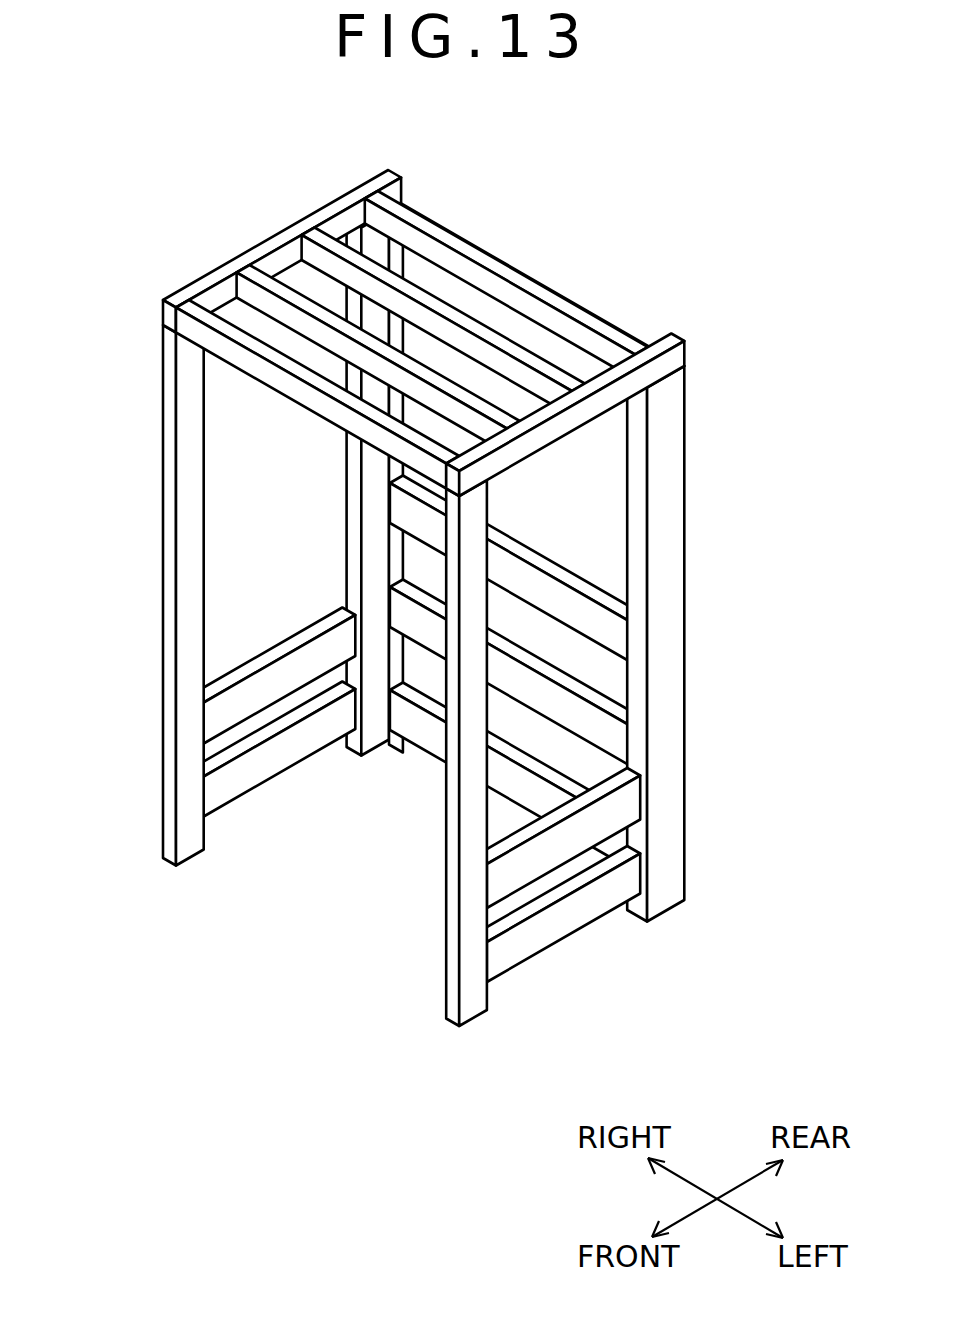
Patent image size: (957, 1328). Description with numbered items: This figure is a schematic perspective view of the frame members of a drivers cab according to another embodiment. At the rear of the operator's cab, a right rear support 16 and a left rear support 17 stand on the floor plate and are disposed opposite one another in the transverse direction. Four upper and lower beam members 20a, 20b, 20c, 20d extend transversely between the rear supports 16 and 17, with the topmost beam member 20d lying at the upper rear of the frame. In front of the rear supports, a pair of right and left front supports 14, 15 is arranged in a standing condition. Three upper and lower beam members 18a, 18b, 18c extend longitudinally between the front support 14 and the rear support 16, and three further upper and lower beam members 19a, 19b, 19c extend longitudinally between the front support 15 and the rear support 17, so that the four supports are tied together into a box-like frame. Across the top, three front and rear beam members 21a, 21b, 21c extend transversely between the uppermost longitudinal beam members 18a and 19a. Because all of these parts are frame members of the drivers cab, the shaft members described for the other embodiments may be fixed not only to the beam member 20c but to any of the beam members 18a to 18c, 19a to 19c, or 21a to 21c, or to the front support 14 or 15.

The front support 14 is at (163, 806).
The front support 15 is at (446, 958).
The right rear support 16 is at (376, 482).
The left rear support 17 is at (668, 638).
The beam member 18a is at (283, 228).
The beam member 18b is at (285, 667).
The beam member 18c is at (281, 762).
The beam member 19a is at (597, 405).
The beam member 19b is at (627, 803).
The beam member 19c is at (627, 867).
The beam member 20a is at (585, 594).
The beam member 20b is at (590, 690).
The beam member 20c is at (545, 788).
The beam member 20d is at (568, 306).
The front and rear beam member 21a is at (236, 333).
The front and rear beam member 21b is at (267, 273).
The front and rear beam member 21c is at (405, 278).